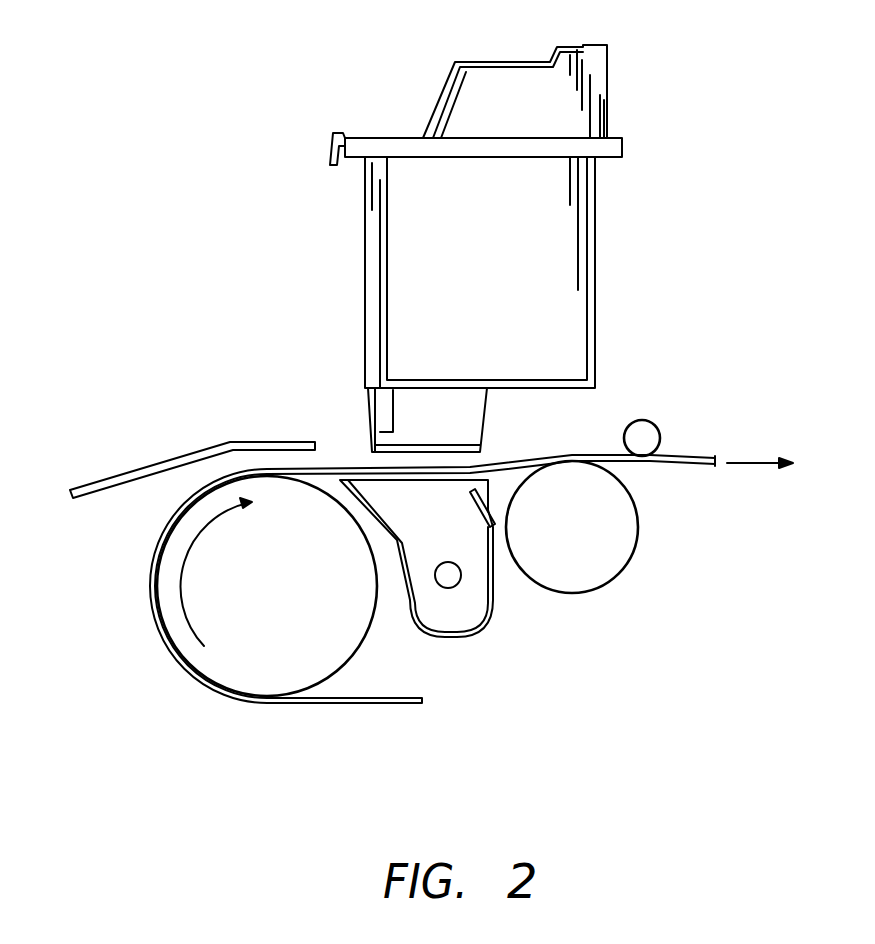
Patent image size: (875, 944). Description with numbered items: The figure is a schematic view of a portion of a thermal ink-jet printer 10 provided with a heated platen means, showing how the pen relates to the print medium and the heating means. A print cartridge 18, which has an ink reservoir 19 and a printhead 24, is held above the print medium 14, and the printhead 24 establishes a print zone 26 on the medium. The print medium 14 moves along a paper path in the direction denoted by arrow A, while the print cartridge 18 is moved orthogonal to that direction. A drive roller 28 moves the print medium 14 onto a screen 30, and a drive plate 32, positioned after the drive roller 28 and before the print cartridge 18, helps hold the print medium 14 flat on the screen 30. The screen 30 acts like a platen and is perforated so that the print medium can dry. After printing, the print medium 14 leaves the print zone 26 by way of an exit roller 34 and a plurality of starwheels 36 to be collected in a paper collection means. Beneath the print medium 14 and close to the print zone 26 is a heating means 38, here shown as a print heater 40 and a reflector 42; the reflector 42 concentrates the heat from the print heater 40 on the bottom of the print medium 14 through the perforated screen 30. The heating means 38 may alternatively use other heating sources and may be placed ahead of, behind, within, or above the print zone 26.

The ink-jet printer 10 is at (747, 67).
The print cartridge 18 is at (365, 207).
The ink reservoir 19 is at (423, 242).
The print zone 26 is at (435, 445).
The printhead 24 is at (482, 428).
The drive plate 32 is at (287, 442).
The drive roller 28 is at (255, 632).
The print medium 14 is at (692, 457).
The starwheels 36 is at (640, 420).
The exit roller 34 is at (605, 582).
The screen 30 is at (415, 480).
The reflector 42 is at (472, 638).
The print heater 40 is at (455, 587).
The heating means 38 is at (448, 652).
The arrow A is at (753, 462).